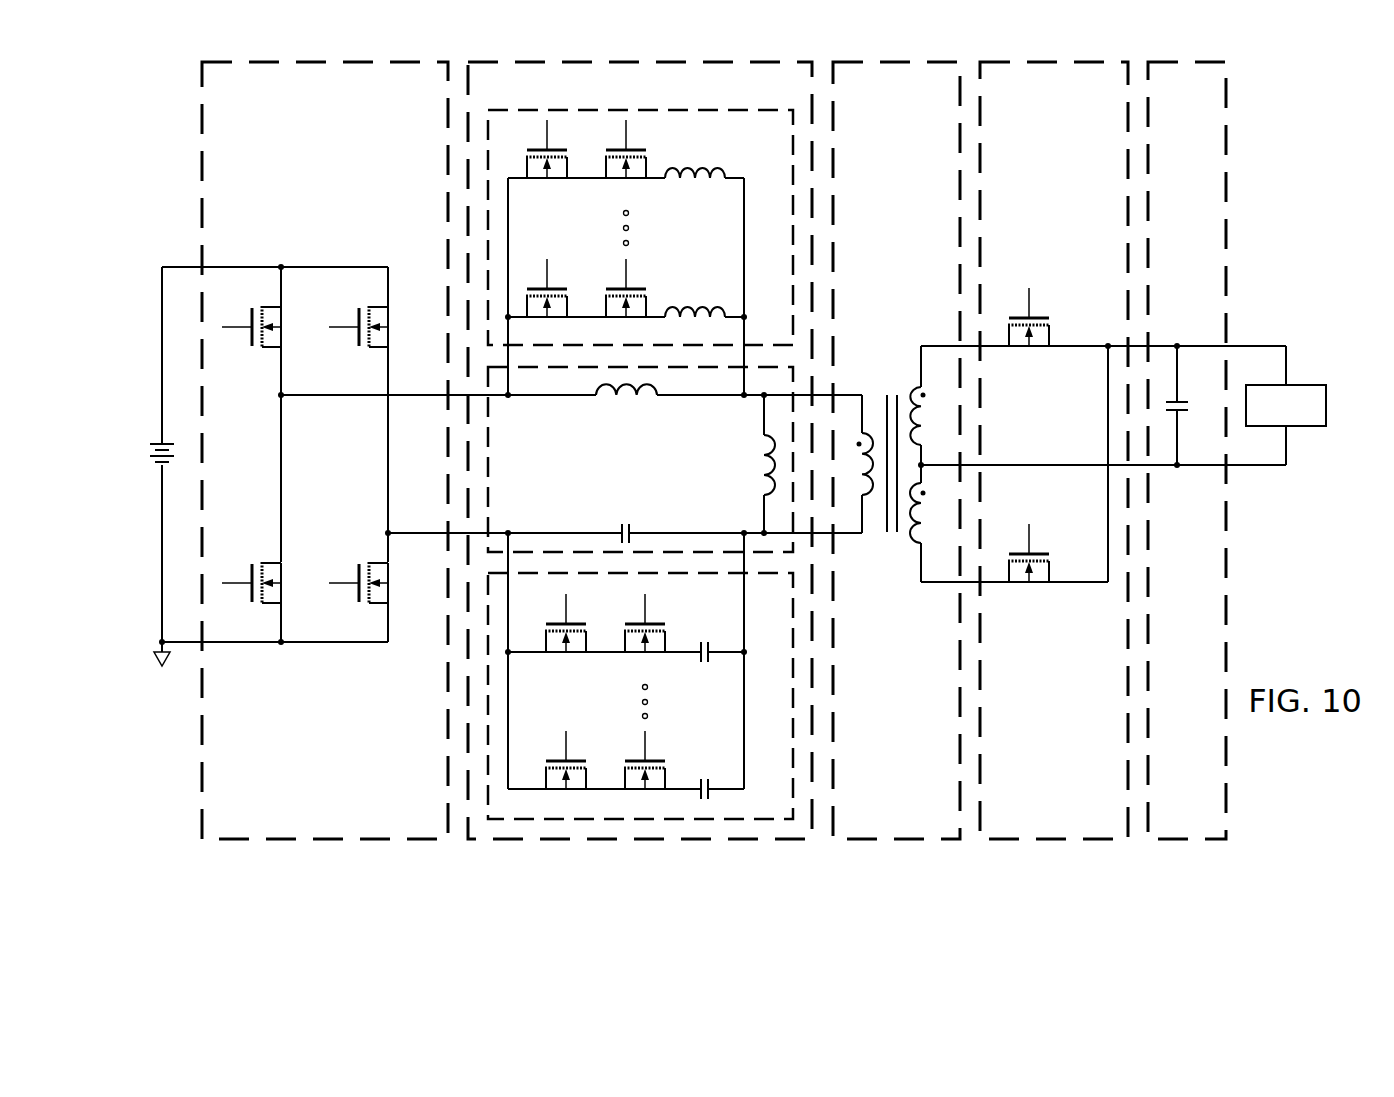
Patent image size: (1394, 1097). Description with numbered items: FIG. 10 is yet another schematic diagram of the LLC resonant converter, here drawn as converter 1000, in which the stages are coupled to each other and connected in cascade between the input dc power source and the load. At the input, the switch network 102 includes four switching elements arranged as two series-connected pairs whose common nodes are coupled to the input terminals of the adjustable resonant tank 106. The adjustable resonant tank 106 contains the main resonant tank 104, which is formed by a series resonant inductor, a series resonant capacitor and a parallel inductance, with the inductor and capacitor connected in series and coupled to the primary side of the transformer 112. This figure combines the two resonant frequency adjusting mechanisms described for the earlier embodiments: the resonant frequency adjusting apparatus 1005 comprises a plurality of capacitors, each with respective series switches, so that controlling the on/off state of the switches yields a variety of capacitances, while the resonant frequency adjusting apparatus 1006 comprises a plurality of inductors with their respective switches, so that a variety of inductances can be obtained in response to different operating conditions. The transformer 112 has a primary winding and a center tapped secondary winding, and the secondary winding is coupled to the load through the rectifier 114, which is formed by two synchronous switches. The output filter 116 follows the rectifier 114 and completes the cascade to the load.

The resonant converter 1000 is at (184, 156).
The switch network 102 is at (300, 99).
The main resonant tank 104 is at (527, 477).
The adjustable resonant tank 106 is at (617, 99).
The resonant frequency adjusting apparatus 1005 is at (672, 714).
The resonant frequency adjusting apparatus 1006 is at (722, 147).
The transformer 112 is at (872, 99).
The rectifier 114 is at (1030, 99).
The output filter 116 is at (1167, 99).